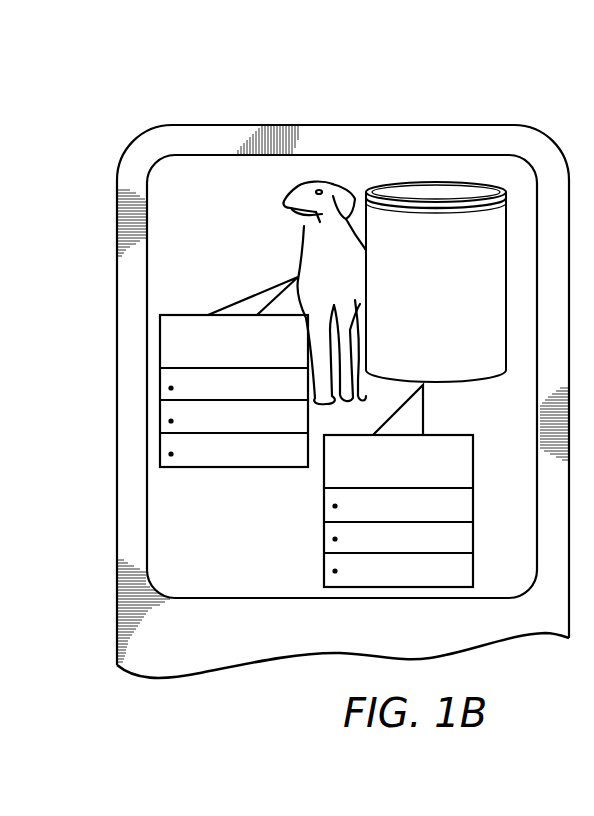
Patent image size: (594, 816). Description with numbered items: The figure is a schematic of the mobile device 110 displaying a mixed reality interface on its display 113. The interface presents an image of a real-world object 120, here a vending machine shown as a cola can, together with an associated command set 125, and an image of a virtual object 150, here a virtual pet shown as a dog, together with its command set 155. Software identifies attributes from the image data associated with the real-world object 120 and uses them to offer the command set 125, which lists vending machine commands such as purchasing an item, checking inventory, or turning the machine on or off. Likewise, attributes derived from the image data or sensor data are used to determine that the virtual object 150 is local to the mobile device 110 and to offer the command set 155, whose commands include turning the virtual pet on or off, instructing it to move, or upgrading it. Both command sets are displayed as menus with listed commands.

The mobile device 110 is at (487, 82).
The display 113 is at (186, 175).
The real-world object 120 is at (448, 184).
The command set 125 is at (324, 568).
The virtual object 150 is at (323, 181).
The command set 155 is at (160, 340).